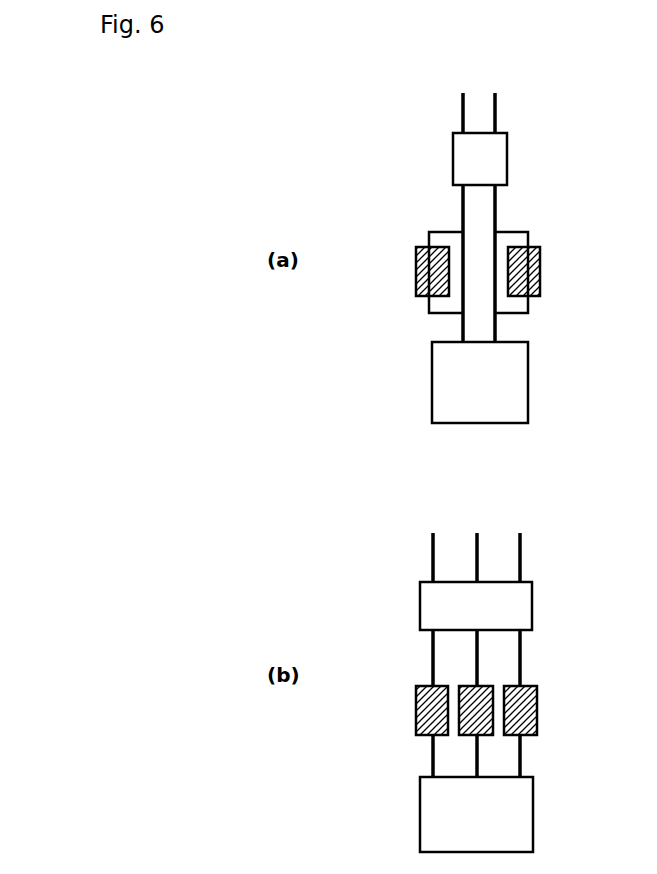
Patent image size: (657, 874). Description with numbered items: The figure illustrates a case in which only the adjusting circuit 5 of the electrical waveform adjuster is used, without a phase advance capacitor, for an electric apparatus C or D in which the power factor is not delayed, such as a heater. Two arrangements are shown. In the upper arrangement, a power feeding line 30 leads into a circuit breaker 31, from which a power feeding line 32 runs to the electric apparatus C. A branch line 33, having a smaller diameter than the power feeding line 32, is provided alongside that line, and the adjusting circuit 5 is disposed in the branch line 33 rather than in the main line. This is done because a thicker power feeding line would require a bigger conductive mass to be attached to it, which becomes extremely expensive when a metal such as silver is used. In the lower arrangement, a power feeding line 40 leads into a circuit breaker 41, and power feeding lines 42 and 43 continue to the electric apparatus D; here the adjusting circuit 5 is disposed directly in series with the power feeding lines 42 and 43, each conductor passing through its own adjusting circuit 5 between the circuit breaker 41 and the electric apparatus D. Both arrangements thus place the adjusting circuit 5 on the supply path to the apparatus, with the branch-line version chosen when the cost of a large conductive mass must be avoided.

The power feeding line 30 is at (498, 120).
The circuit breaker 31 is at (488, 166).
The power feeding line 32 is at (495, 203).
The branch line 33 is at (505, 229).
The adjusting circuit 5 is at (527, 273).
The electric apparatus C is at (495, 374).
The power feeding line 40 is at (523, 557).
The circuit breaker 41 is at (512, 607).
The power feeding line 42 is at (522, 655).
The power feeding line 43 is at (522, 757).
The electric apparatus D is at (493, 827).